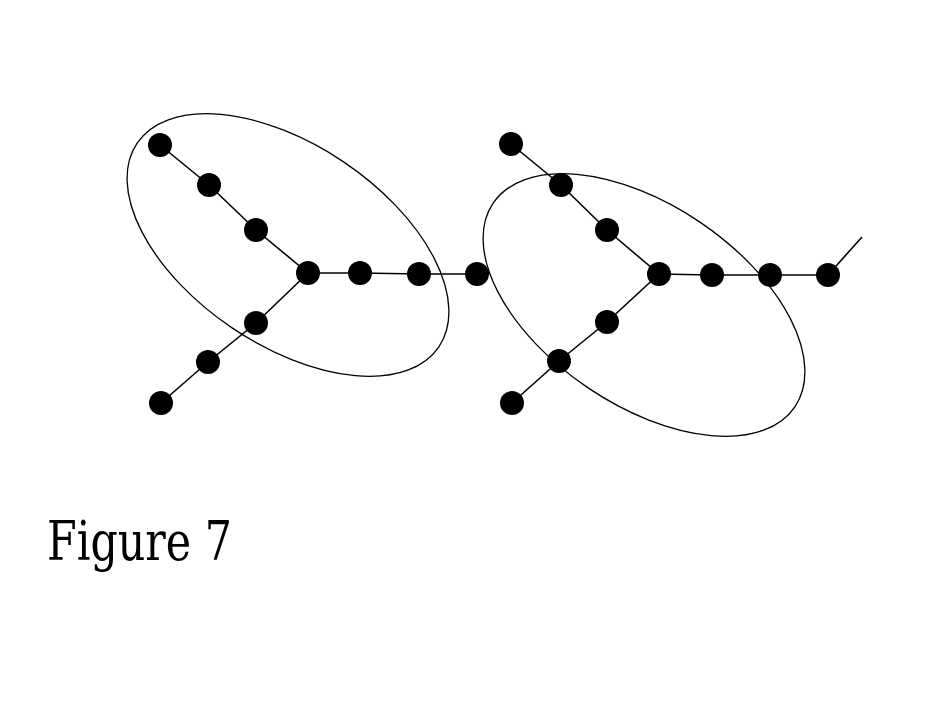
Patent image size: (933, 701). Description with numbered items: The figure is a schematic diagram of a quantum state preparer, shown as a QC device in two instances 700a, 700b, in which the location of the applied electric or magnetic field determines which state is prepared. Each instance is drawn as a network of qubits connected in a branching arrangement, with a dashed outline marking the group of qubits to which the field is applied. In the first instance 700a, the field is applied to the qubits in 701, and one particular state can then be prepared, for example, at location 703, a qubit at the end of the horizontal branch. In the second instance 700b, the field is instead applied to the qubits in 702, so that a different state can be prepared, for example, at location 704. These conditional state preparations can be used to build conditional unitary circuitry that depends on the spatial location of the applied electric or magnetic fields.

The QC device 700a is at (339, 66).
The QC device 700b is at (717, 138).
The qubits 701 is at (235, 114).
The qubits 702 is at (727, 360).
The location 703 is at (483, 261).
The location 704 is at (880, 218).